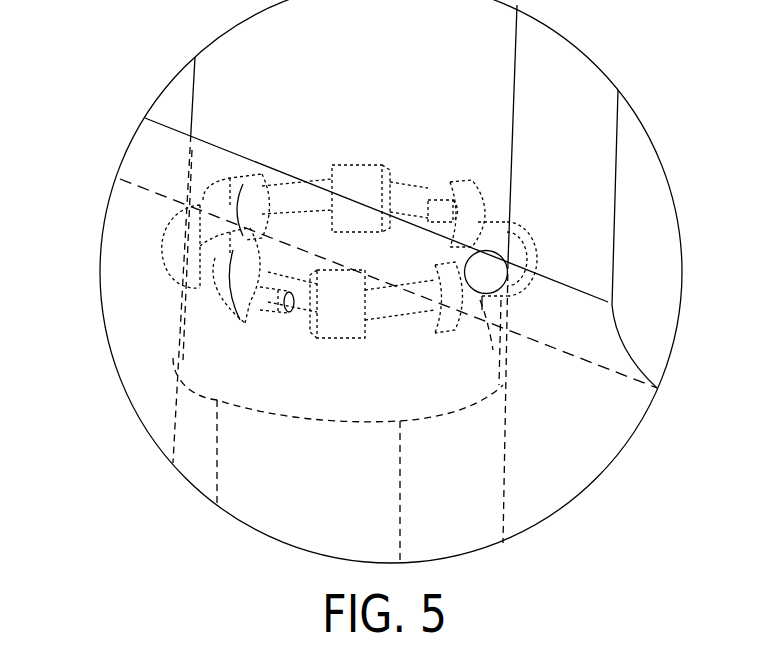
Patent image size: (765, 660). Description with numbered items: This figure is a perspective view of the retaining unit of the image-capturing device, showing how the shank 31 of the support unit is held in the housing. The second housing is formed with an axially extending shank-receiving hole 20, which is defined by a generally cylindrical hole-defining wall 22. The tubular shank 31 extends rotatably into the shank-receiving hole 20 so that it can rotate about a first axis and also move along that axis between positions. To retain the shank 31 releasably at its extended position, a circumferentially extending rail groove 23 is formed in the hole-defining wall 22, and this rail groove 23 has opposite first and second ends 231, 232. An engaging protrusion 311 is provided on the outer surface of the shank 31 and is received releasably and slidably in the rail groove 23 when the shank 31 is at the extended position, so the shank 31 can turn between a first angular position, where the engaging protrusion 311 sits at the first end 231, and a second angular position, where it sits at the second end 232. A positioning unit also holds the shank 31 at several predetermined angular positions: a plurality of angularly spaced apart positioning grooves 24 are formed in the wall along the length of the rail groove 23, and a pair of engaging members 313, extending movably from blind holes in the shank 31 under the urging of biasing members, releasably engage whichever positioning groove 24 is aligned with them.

The shank-receiving hole 20 is at (503, 443).
The hole-defining wall 22 is at (173, 398).
The rail groove 23 is at (213, 281).
The positioning grooves 24 is at (335, 340).
The shank 31 is at (473, 88).
The first end 231 is at (400, 163).
The second end 232 is at (426, 195).
The engaging protrusion 311 is at (255, 310).
The engaging members 313 is at (485, 325).